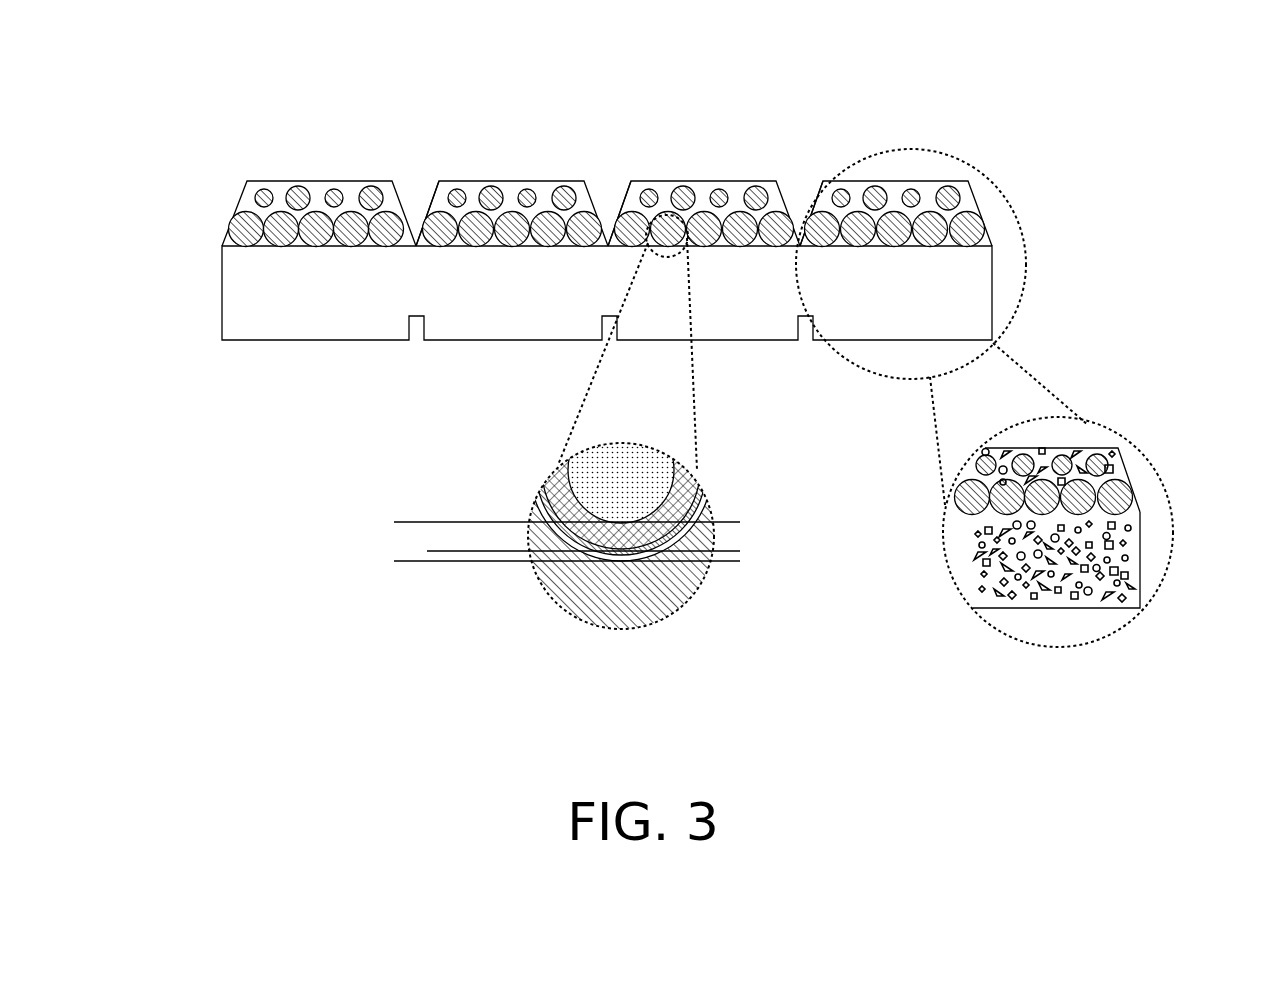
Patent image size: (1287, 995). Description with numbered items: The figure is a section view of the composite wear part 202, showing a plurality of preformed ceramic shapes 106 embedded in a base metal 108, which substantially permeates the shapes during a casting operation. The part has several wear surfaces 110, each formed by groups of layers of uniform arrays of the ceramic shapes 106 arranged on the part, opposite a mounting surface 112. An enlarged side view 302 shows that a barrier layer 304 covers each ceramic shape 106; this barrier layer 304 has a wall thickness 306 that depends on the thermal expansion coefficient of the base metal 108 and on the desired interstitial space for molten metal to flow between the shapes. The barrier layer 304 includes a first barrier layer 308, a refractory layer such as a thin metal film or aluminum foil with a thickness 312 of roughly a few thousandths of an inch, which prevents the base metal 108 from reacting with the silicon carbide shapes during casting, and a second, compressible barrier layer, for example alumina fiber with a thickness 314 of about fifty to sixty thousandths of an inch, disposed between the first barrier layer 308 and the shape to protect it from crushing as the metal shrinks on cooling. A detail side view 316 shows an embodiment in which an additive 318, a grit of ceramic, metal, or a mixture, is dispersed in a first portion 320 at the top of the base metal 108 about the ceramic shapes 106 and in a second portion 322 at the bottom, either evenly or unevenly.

The composite wear part 202 is at (174, 84).
The preformed ceramic shapes 106 is at (262, 190).
The base metal 108 is at (453, 181).
The wear surface 110 is at (518, 163).
The mounting surface 112 is at (518, 354).
The side view 302 is at (690, 606).
The barrier layer 304 is at (740, 522).
The wall thickness 306 is at (413, 561).
The first barrier layer 308 is at (713, 551).
The thickness 312 is at (435, 566).
The thickness 314 is at (510, 551).
The detail side view 316 is at (962, 601).
The additive 318 is at (975, 462).
The first portion 320 is at (975, 181).
The second portion 322 is at (992, 246).